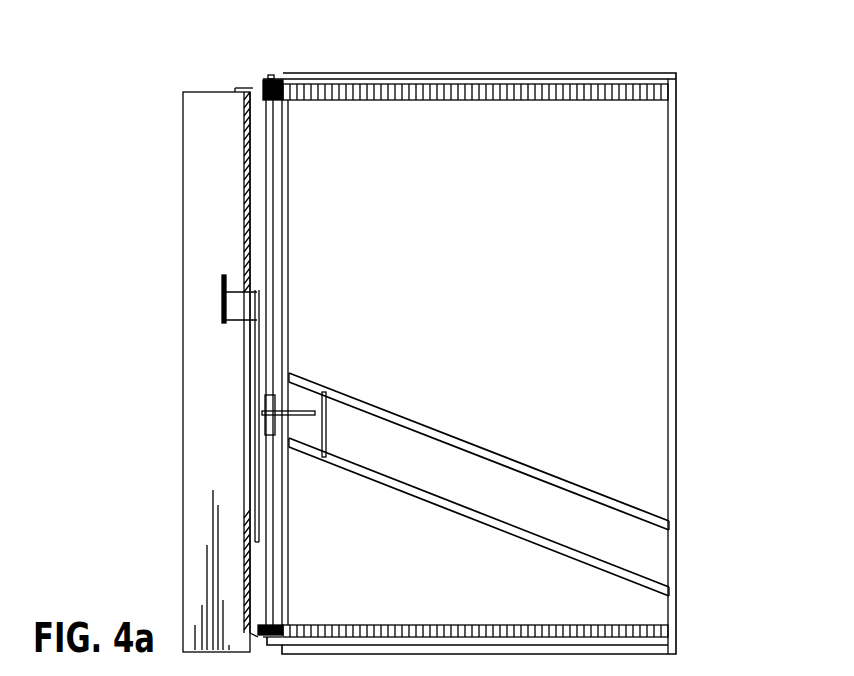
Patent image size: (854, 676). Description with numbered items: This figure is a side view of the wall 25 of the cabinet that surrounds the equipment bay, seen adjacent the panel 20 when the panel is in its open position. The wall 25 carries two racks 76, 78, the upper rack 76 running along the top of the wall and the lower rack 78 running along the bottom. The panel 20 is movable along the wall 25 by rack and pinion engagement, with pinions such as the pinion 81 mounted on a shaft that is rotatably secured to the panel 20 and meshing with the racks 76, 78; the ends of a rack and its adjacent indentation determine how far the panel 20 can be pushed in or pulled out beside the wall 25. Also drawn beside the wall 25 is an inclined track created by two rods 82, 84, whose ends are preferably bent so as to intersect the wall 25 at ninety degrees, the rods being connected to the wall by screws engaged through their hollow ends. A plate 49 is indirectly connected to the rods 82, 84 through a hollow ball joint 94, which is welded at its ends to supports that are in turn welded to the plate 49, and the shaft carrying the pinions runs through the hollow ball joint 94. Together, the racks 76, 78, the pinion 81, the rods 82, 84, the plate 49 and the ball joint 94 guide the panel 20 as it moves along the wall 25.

The panel 20 is at (162, 96).
The wall 25 is at (553, 73).
The plate 49 is at (258, 502).
The rack 76 is at (663, 92).
The rack 78 is at (663, 630).
The pinion 81 is at (259, 90).
The rod 82 is at (548, 468).
The rod 84 is at (548, 552).
The hollow ball joint 94 is at (263, 413).